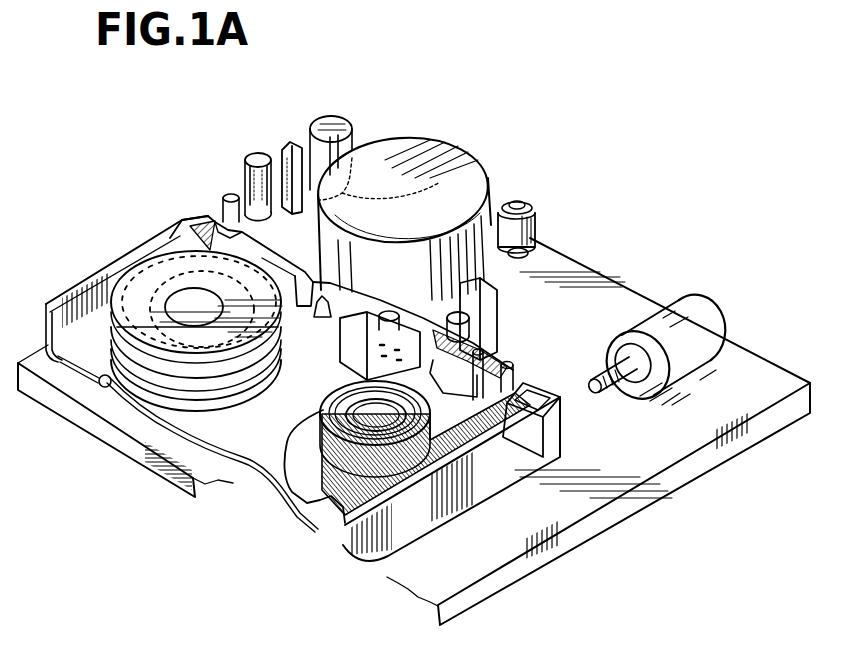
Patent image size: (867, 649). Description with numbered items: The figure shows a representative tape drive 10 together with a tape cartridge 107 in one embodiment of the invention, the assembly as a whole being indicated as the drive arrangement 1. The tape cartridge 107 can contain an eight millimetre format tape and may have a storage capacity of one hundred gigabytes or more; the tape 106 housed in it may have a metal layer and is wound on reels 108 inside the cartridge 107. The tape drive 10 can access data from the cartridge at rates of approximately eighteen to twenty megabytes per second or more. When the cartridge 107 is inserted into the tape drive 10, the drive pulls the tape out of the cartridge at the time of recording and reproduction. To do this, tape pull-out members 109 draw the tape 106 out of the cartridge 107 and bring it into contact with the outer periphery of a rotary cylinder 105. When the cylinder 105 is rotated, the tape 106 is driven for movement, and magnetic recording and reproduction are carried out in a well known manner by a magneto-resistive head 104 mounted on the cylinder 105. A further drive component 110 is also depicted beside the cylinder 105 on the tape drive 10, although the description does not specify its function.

The tape drive mechanism 1 is at (538, 222).
The tape drive 10 is at (658, 482).
The magneto-resistive head 104 is at (468, 185).
The rotary cylinder 105 is at (427, 137).
The tape 106 is at (500, 363).
The tape cartridge 107 is at (117, 258).
The reels 108 is at (150, 353).
The tape pull-out members 109 is at (242, 208).
The drive motor 110 is at (700, 313).